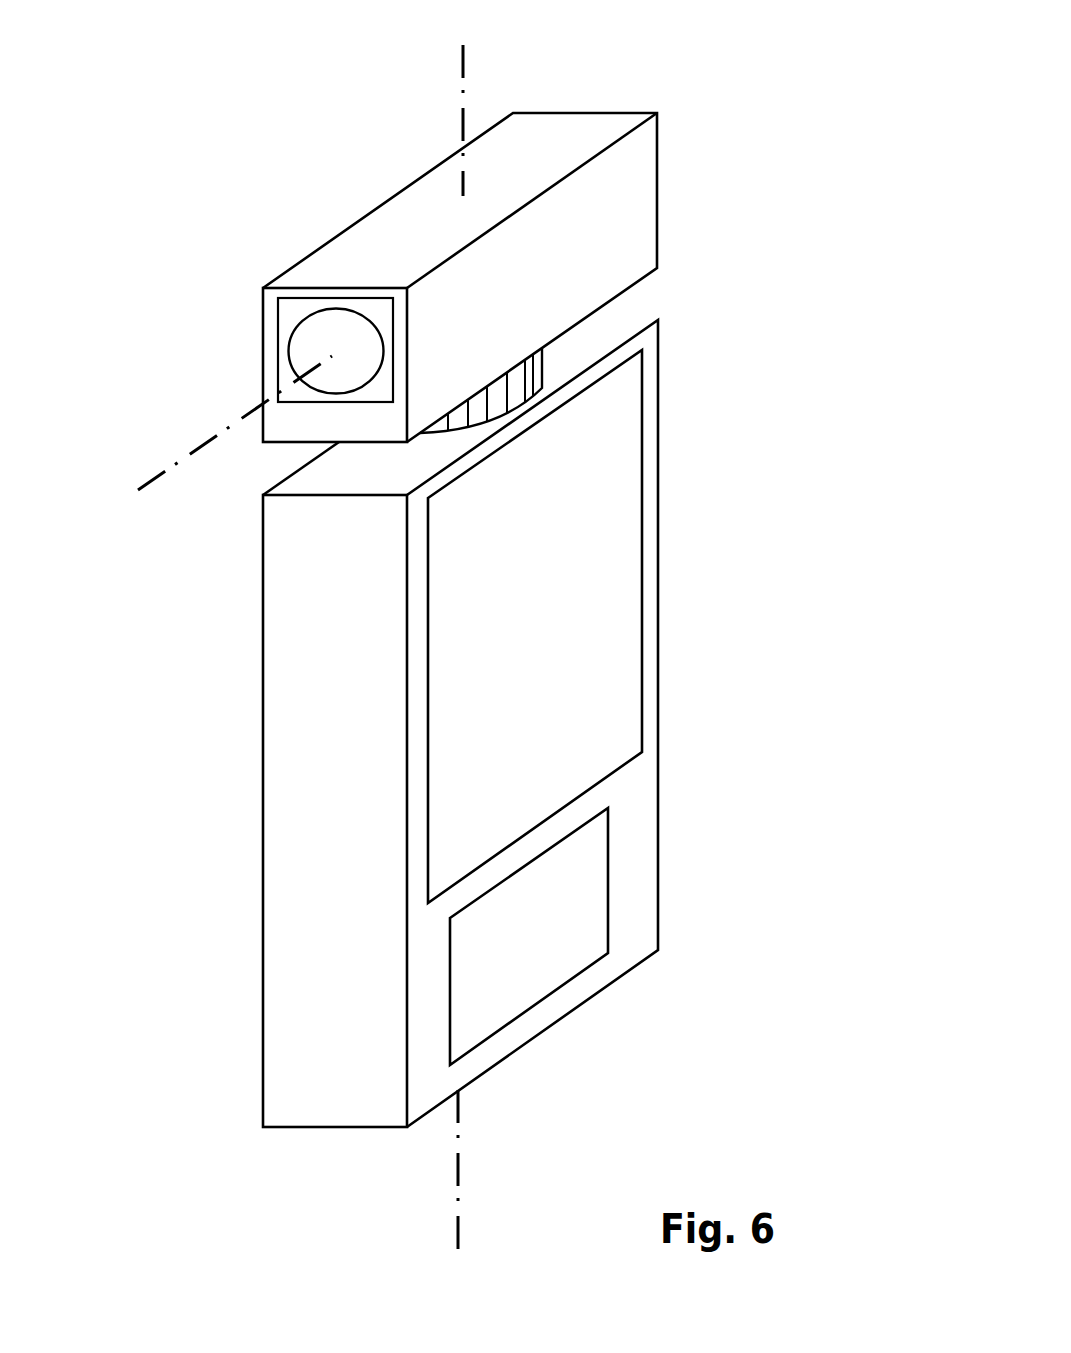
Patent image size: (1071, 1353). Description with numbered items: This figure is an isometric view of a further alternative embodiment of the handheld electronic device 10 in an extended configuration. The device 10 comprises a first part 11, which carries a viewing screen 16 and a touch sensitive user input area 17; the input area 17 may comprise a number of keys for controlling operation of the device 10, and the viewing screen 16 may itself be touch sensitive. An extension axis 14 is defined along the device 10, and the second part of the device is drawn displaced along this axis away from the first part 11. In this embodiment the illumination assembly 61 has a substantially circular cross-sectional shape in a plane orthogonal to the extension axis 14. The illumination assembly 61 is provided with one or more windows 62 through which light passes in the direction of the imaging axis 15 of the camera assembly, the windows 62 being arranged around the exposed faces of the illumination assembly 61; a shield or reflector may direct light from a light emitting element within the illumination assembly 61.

The handheld electronic device 10 is at (795, 100).
The first part 11 is at (660, 535).
The extension axis 14 is at (463, 72).
The imaging axis 15 is at (165, 472).
The viewing screen 16 is at (532, 643).
The touch sensitive user input area 17 is at (545, 951).
The illumination assembly 61 is at (547, 358).
The windows 62 is at (518, 385).